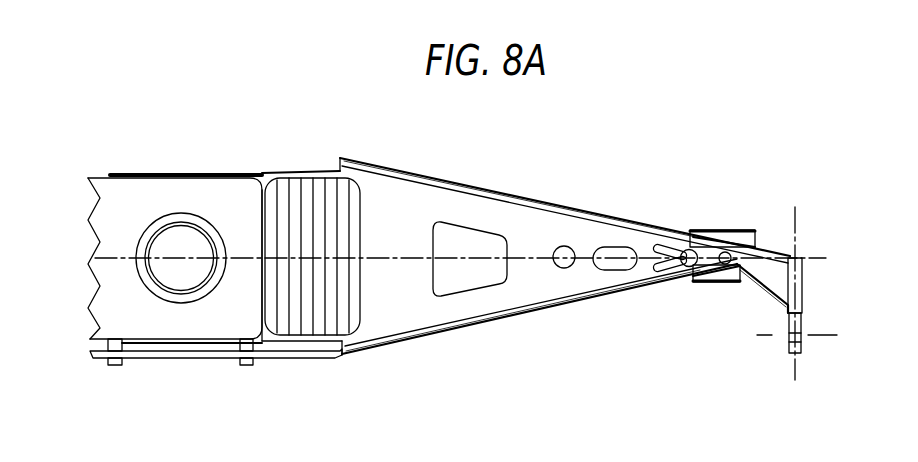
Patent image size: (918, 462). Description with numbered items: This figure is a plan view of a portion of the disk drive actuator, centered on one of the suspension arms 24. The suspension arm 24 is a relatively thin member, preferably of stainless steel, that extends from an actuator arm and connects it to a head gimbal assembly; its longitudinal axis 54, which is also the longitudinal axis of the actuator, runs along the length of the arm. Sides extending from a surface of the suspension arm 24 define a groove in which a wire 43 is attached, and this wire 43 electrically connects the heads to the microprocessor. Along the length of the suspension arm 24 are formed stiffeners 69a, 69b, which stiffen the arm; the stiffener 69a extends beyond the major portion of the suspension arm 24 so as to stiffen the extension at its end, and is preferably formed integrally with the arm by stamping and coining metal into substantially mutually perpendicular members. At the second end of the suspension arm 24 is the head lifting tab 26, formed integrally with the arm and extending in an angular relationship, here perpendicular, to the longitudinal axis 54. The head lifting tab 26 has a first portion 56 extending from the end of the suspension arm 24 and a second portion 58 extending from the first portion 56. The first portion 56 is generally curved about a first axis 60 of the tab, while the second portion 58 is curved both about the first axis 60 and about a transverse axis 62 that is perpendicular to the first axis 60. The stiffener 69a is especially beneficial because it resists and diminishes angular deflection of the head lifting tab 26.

The suspension arm 24 is at (397, 217).
The head lifting tab 26 is at (773, 278).
The wire 43 is at (305, 358).
The longitudinal axis 54 is at (532, 255).
The first portion 56 is at (805, 293).
The second portion 58 is at (805, 342).
The first axis 60 is at (790, 227).
The transverse axis 62 is at (768, 337).
The stiffener 69a is at (502, 193).
The stiffener 69b is at (522, 322).